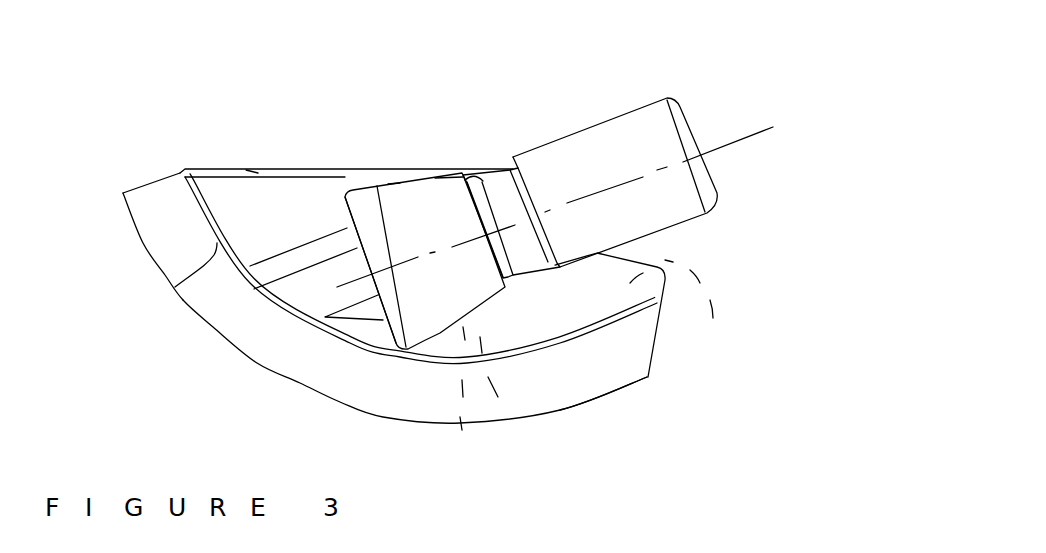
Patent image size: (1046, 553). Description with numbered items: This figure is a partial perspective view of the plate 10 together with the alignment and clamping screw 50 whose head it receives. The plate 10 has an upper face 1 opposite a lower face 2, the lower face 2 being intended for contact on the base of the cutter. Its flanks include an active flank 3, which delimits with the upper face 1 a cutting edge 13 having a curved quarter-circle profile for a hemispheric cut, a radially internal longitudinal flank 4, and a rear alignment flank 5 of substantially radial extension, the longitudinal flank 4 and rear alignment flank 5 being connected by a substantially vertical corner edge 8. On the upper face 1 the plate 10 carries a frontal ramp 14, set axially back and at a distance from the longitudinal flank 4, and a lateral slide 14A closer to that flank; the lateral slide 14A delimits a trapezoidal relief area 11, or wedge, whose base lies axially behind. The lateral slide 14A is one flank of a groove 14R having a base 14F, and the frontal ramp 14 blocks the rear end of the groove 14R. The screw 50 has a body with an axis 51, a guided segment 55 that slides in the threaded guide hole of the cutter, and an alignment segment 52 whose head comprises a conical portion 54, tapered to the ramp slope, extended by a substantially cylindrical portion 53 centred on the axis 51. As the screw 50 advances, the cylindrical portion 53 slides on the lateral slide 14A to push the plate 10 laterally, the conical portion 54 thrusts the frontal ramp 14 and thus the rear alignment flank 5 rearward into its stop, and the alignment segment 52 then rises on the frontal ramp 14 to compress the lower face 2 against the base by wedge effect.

The upper face 1 is at (560, 313).
The lower face 2 is at (522, 425).
The active flank 3 is at (183, 232).
The radially internal longitudinal flank 4 is at (253, 173).
The rear alignment flank 5 is at (677, 310).
The corner edge 8 is at (499, 197).
The plate 10 is at (160, 197).
The trapezoidal relief area 11 is at (421, 269).
The cutting edge 13 is at (176, 286).
The frontal ramp 14 is at (462, 418).
The lateral slide 14A is at (285, 268).
The base of the groove 14F is at (312, 292).
The groove 14R is at (327, 298).
The screw 50 is at (327, 143).
The axis 51 is at (748, 135).
The alignment segment 52 is at (363, 102).
The cylindrical portion 53 is at (364, 186).
The conical portion 54 is at (390, 185).
The guided segment 55 is at (623, 113).